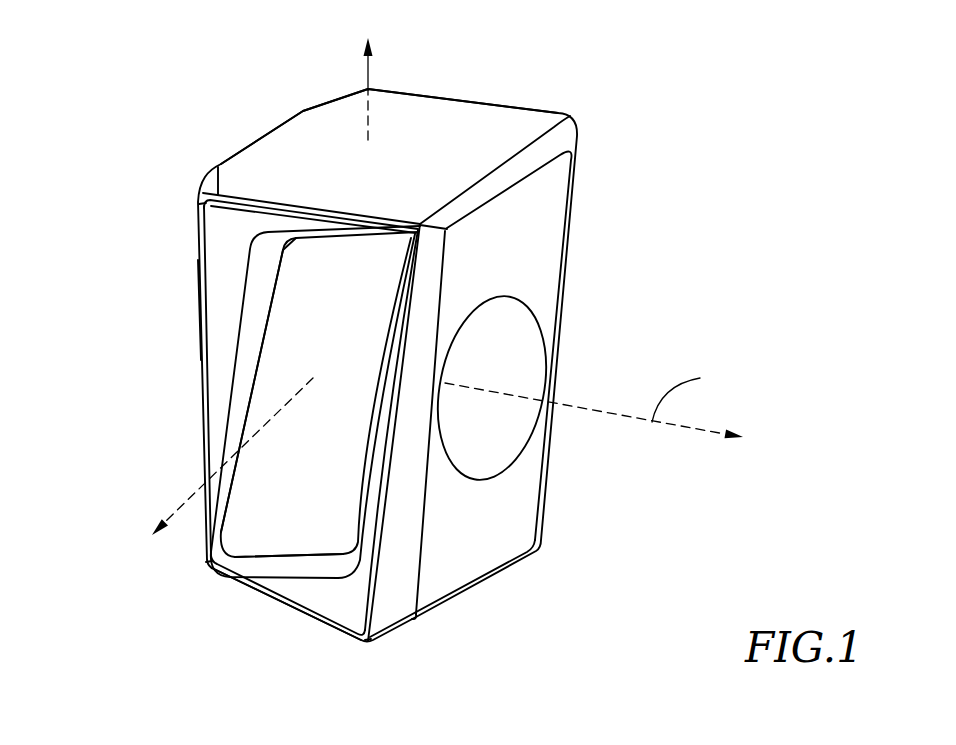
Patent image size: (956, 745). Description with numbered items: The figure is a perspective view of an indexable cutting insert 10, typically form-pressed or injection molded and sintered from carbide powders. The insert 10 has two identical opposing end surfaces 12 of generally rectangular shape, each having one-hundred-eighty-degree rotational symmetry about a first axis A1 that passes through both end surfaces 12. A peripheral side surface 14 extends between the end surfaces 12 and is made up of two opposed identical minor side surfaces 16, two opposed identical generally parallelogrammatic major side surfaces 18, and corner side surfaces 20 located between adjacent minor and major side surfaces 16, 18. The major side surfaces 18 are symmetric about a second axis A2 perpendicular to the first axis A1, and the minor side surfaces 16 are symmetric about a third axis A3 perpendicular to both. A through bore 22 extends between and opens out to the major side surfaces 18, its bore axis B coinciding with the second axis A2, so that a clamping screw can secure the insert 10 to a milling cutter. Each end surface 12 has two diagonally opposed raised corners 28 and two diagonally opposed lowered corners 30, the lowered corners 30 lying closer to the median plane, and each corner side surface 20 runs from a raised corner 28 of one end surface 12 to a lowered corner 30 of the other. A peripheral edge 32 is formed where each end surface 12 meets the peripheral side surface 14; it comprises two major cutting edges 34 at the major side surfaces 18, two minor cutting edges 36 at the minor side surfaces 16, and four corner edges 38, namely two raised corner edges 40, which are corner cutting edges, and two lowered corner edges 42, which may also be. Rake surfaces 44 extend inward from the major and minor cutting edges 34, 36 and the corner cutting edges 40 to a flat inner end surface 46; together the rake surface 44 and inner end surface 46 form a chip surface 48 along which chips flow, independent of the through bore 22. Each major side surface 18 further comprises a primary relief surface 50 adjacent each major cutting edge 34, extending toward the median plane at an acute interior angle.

The cutting insert 10 is at (672, 77).
The end surface 12 is at (274, 350).
The peripheral side surface 14 is at (296, 151).
The minor side surface 16 is at (446, 120).
The major side surface 18 is at (538, 213).
The corner side surface 20 is at (512, 175).
The through bore 22 is at (518, 368).
The raised corner 28 is at (199, 200).
The lowered corner 30 is at (207, 573).
The peripheral edge 32 is at (197, 283).
The major cutting edge 34 is at (380, 550).
The minor cutting edge 36 is at (262, 603).
The corner edge 38 is at (198, 202).
The raised corner edge 40 is at (199, 205).
The lowered corner edge 42 is at (430, 240).
The rake surface 44 is at (222, 308).
The inner end surface 46 is at (253, 420).
The chip surface 48 is at (270, 385).
The primary relief surface 50 is at (403, 523).
The first axis A1 is at (218, 456).
The second axis A2 is at (603, 410).
The third axis A3 is at (351, 88).
The bore axis B is at (686, 392).